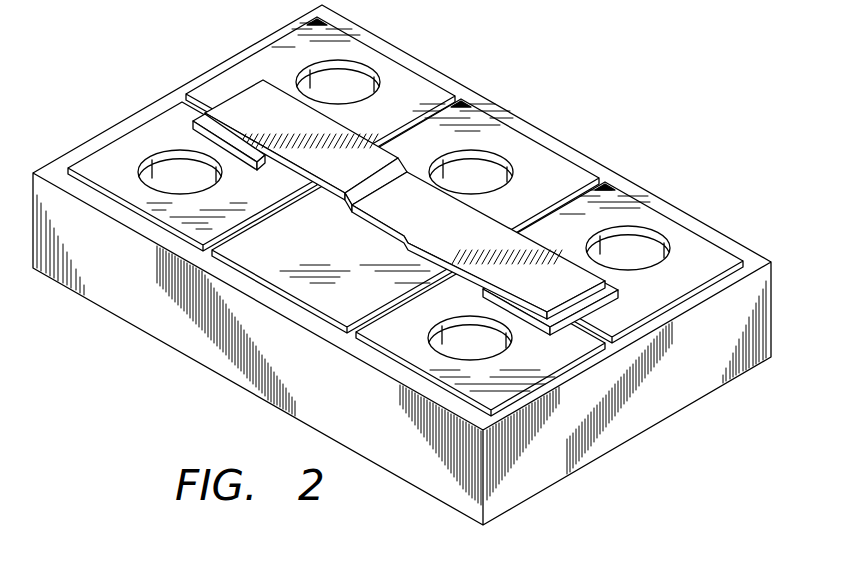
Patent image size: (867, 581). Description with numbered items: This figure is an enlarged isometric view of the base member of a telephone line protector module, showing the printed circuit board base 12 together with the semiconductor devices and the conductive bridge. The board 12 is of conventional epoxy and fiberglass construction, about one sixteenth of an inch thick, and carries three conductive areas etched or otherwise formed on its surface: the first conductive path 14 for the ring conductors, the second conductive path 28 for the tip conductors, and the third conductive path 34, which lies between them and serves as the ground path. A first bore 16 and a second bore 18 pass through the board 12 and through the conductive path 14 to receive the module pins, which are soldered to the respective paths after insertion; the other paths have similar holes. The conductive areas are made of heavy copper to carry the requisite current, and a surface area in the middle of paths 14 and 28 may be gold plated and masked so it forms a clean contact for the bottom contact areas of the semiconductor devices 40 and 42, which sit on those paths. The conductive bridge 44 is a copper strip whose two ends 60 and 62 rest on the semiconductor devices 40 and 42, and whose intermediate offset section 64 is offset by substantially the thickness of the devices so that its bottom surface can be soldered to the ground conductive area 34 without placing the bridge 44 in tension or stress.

The base member 12 is at (661, 416).
The first conductive path 14 is at (608, 260).
The first bore 16 is at (644, 248).
The second bore 18 is at (427, 338).
The second conductive path 28 is at (100, 158).
The third conductive path 34 is at (315, 239).
The semiconductor device 40 is at (622, 286).
The semiconductor device 42 is at (199, 118).
The conductive bridge 44 is at (362, 125).
The end of conductive bridge 60 is at (430, 206).
The end of conductive bridge 62 is at (486, 219).
The intermediate offset section 64 is at (402, 228).